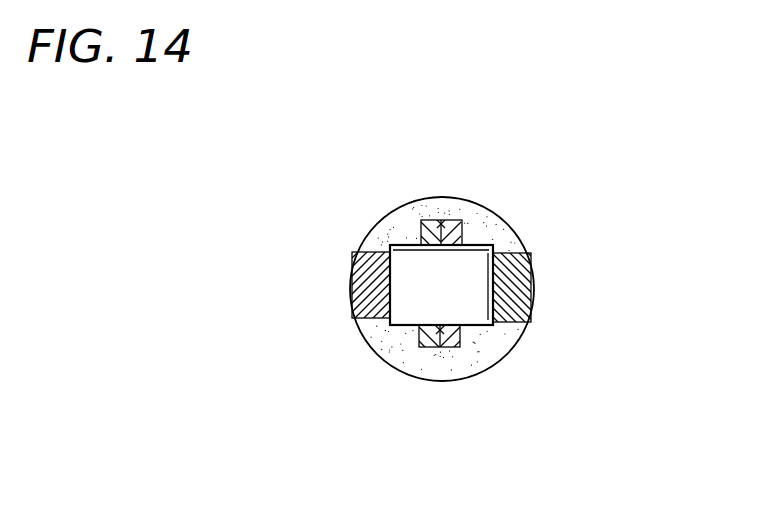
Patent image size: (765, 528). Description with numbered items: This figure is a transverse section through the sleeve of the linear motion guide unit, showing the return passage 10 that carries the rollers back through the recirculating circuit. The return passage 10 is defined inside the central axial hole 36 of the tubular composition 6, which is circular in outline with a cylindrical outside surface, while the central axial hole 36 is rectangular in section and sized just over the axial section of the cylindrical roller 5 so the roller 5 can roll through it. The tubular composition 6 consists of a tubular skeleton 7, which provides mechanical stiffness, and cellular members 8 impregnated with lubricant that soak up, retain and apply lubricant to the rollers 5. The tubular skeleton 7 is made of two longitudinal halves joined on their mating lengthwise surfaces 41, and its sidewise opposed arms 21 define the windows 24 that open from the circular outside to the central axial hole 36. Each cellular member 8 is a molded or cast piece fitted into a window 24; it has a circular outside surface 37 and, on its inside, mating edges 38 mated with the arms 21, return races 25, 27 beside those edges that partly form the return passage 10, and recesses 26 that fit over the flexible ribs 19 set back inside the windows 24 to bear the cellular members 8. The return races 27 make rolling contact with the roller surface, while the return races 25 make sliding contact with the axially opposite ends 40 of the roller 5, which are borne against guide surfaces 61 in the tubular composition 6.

The cylindrical roller 5 is at (435, 297).
The tubular composition 6 is at (530, 216).
The tubular skeleton 7 is at (355, 266).
The cellular member 8 is at (522, 229).
The return passage 10 is at (500, 348).
The flexible rib 19 is at (455, 212).
The arm 21 is at (373, 286).
The window 24 is at (376, 247).
The return race 25 is at (407, 238).
The recess 26 is at (462, 260).
The return race 27 is at (417, 243).
The central axial hole 36 is at (513, 220).
The circular outside surface 37 is at (470, 378).
The mating edge 38 is at (353, 311).
The axially opposite end 40 is at (497, 298).
The mating lengthwise surface 41 is at (440, 212).
The guide surface 61 is at (392, 275).